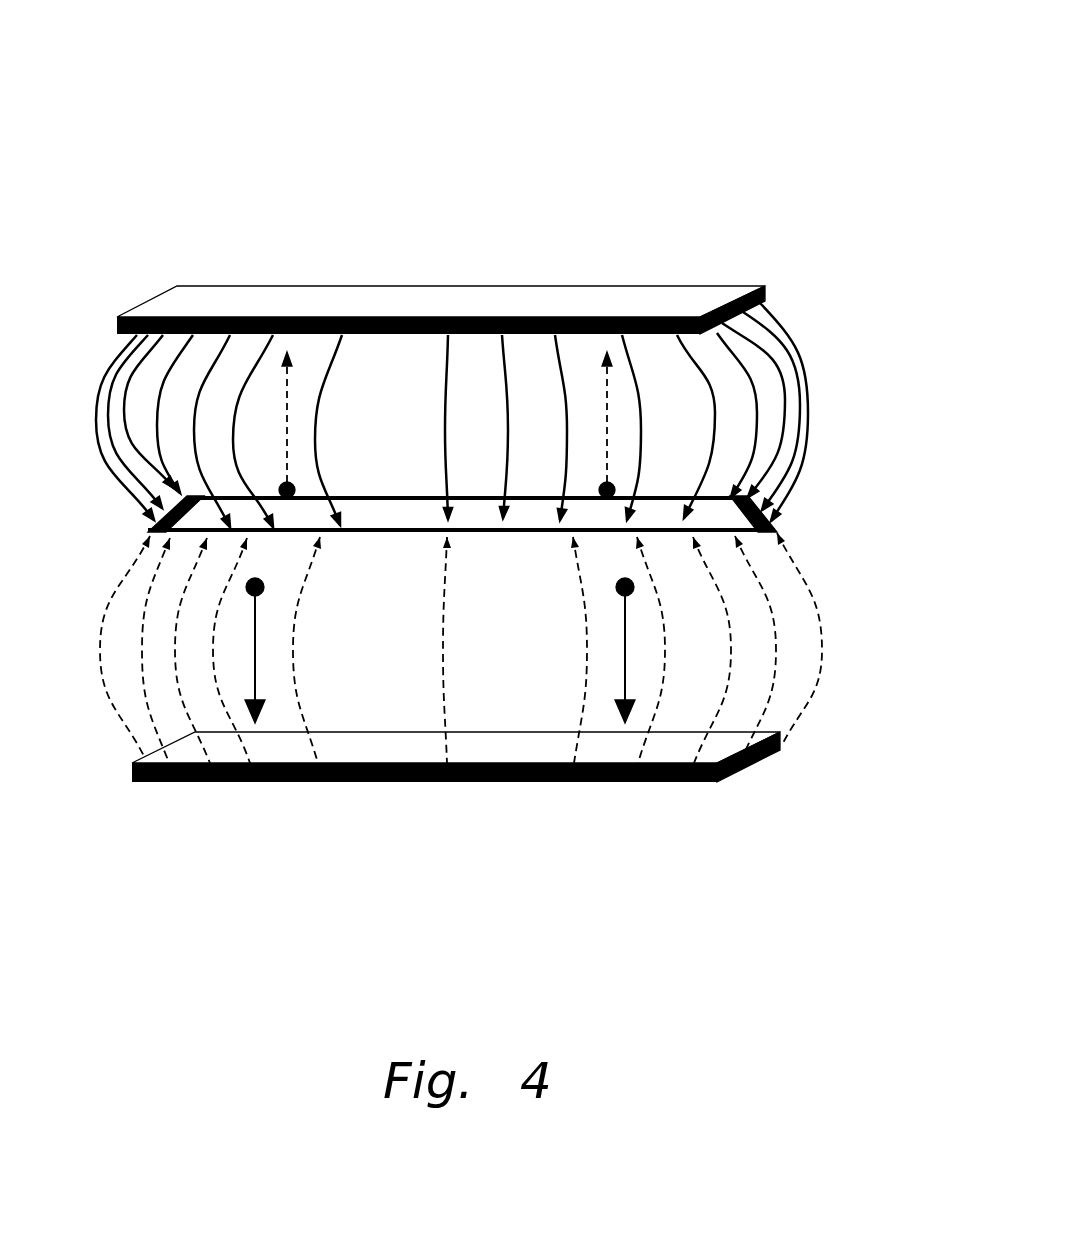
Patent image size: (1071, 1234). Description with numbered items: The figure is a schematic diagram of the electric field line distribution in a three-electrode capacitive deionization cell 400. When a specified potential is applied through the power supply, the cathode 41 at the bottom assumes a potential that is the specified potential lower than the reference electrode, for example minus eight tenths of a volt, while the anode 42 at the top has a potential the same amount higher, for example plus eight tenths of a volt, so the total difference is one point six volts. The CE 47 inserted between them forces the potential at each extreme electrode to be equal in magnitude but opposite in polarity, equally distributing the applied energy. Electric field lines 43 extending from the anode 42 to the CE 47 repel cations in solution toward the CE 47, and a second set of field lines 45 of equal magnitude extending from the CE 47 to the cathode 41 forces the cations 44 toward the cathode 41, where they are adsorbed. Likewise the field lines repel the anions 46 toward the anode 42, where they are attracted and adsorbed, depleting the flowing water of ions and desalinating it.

The CDI cell 400 is at (667, 129).
The cathode 41 is at (555, 784).
The anode 42 is at (601, 286).
The electric field lines 43 is at (106, 370).
The cations 44 is at (257, 657).
The second set of field lines 45 is at (103, 677).
The anions 46 is at (286, 400).
The CE 47 is at (401, 533).